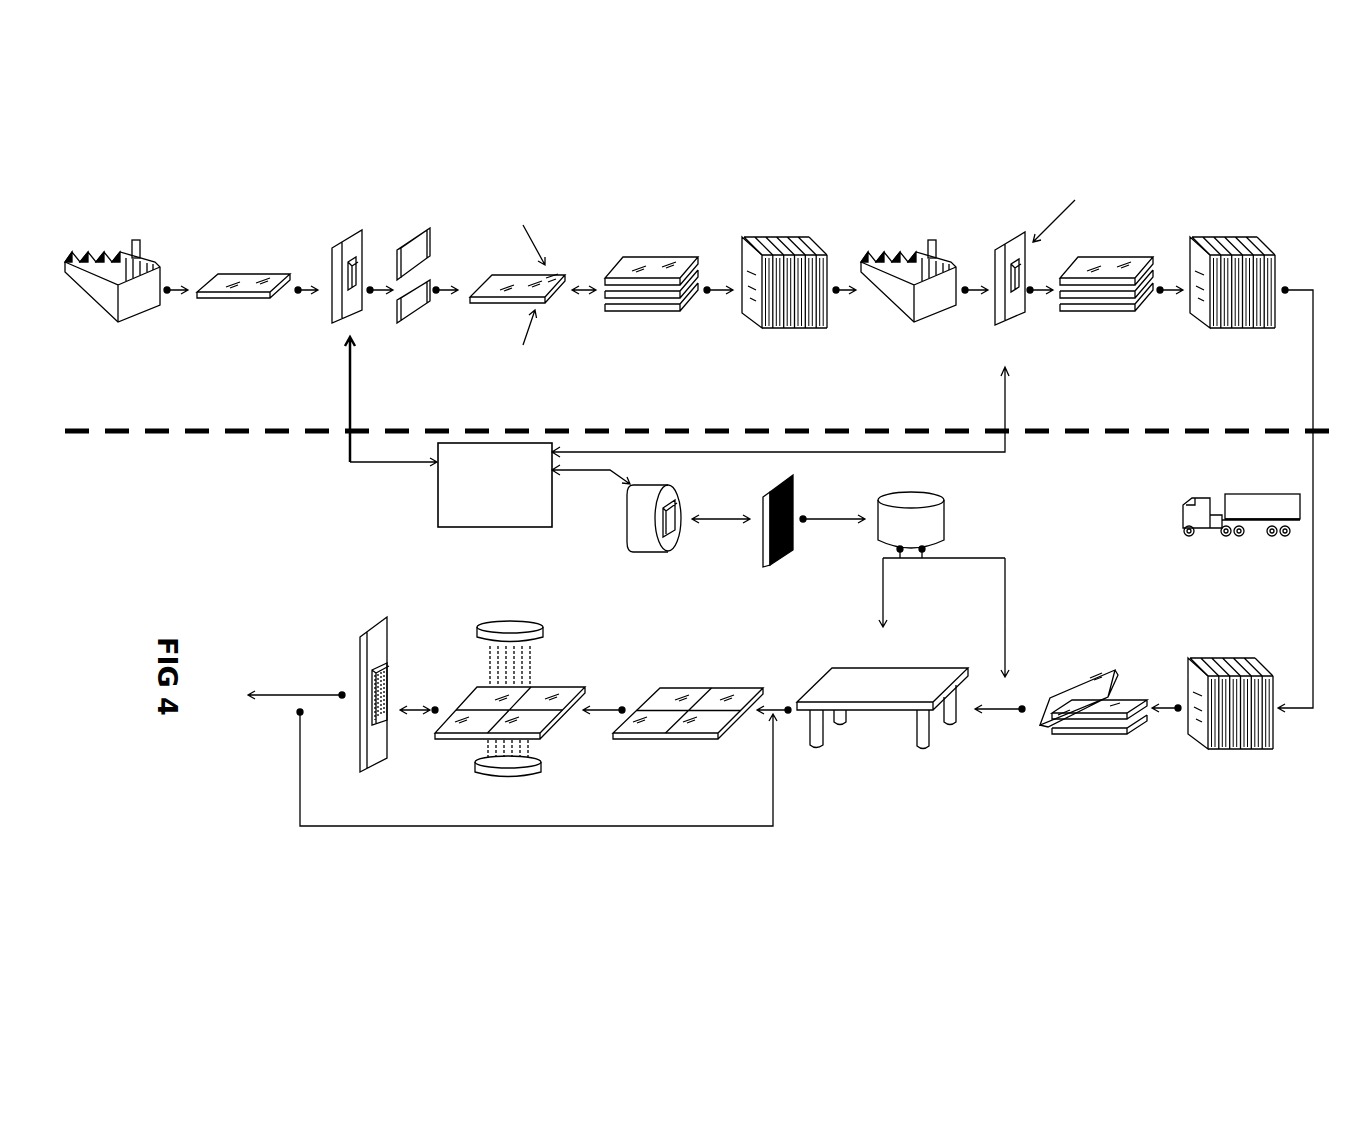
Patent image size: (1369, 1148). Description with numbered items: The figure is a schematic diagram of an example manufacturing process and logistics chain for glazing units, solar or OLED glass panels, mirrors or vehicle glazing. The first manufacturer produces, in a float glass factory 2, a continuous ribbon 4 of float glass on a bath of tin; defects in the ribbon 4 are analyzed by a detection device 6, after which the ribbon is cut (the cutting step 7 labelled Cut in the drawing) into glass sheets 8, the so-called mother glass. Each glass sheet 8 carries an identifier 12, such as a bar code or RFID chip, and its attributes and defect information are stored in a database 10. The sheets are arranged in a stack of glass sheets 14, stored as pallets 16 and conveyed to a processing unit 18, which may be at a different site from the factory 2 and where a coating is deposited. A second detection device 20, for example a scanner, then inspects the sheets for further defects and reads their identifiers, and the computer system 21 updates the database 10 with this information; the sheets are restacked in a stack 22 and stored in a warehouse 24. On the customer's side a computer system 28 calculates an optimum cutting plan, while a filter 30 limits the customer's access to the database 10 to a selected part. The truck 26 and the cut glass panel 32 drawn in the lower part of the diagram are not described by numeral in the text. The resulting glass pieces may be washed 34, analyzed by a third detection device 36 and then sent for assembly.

The float glass factory 2 is at (112, 258).
The continuous ribbon of float glass 4 is at (238, 280).
The detection device 6 is at (332, 267).
The cut glass pieces 7 is at (417, 252).
The glass sheet 8 is at (505, 302).
The identifier 12 is at (550, 272).
The stack of glass sheets 14 is at (650, 260).
The pallets of glass sheets 16 is at (812, 247).
The processing unit 18 is at (905, 258).
The second detection device 20 is at (1008, 250).
The stack 22 is at (1100, 265).
The warehouse 24 is at (1275, 265).
The computer system 21 is at (438, 512).
The database 10 is at (627, 502).
The filter 30 is at (797, 507).
The computer system 28 is at (878, 532).
The truck 26 is at (1312, 548).
The third detection device 36 is at (388, 622).
The washing 34 is at (477, 697).
The assembled glass panel 32 is at (660, 690).